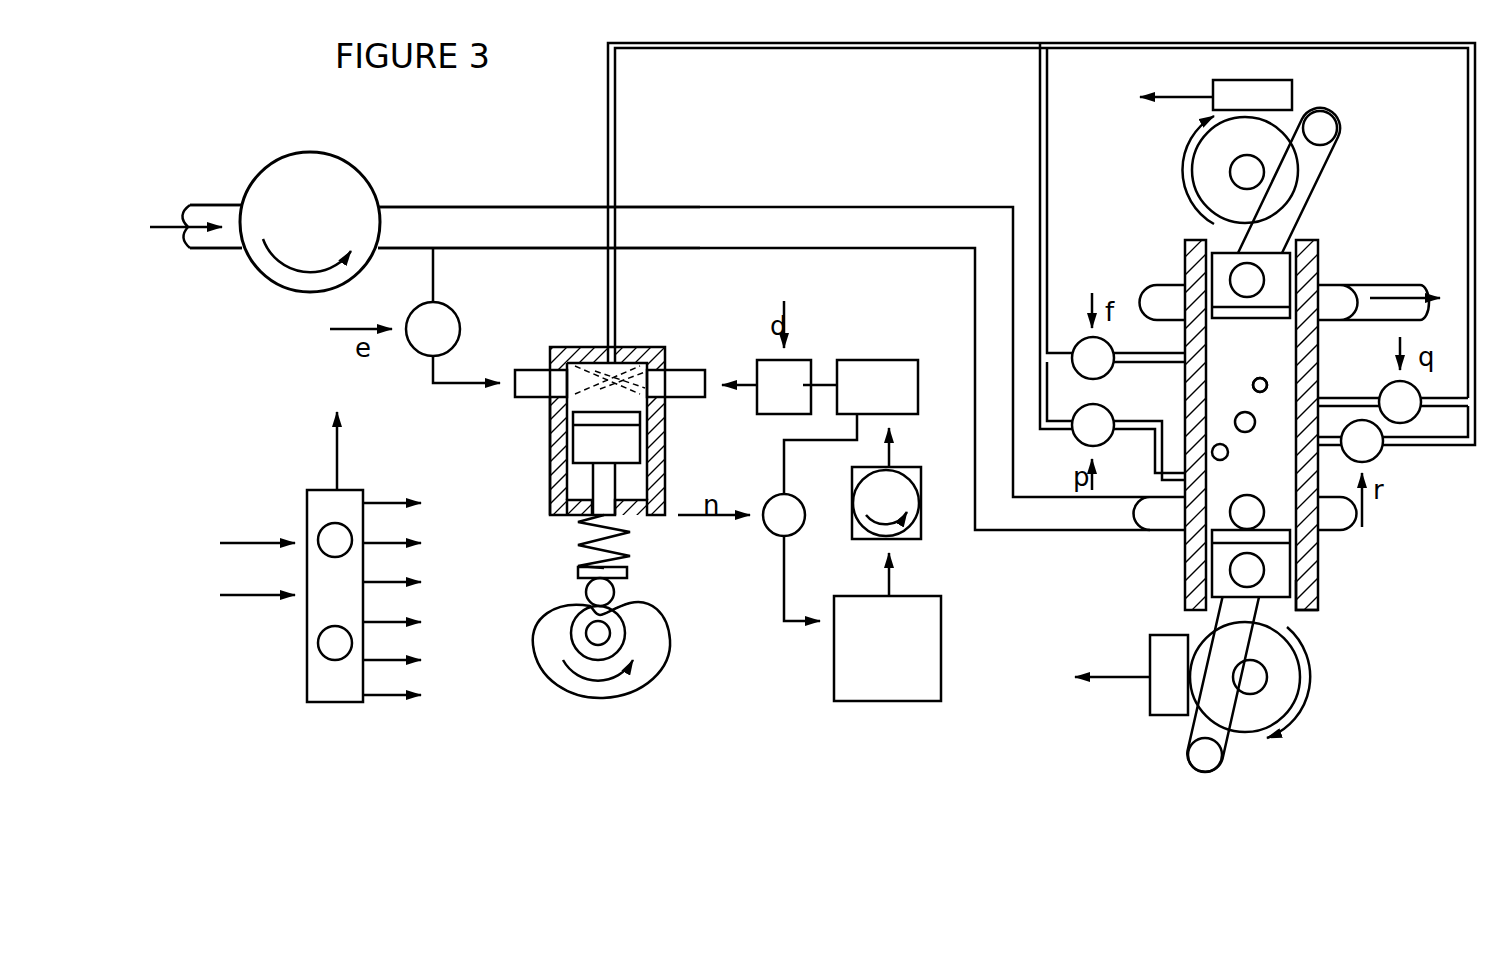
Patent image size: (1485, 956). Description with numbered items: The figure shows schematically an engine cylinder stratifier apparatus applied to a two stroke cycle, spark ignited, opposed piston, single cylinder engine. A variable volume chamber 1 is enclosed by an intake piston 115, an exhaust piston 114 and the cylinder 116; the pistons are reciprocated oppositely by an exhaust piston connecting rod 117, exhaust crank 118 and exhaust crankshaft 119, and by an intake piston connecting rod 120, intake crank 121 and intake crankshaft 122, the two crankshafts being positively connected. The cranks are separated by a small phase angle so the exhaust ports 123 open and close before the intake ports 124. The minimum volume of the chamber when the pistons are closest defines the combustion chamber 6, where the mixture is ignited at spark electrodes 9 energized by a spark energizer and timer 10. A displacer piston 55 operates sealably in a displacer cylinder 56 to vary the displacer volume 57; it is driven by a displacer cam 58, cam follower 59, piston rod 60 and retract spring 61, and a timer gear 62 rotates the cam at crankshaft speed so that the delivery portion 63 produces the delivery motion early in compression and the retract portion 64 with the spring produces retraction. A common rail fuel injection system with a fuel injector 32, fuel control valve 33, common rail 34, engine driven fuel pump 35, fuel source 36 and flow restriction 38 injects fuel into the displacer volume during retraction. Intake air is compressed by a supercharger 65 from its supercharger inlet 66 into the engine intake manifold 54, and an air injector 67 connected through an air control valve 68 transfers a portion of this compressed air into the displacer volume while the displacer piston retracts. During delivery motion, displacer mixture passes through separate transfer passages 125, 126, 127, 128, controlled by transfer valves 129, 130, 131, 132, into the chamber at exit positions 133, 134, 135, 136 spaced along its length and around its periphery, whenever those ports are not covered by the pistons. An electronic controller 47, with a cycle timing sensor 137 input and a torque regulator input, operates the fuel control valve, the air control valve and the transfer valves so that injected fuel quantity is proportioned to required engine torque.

The variable volume chamber 1 is at (1266, 376).
The combustion chamber 6 is at (1150, 495).
The spark electrodes 9 is at (1238, 418).
The spark energizer and timer 10 is at (1268, 102).
The fuel injector 32 is at (682, 380).
The fuel control valve 33 is at (766, 385).
The common rail 34 is at (862, 372).
The engine driven fuel pump 35 is at (882, 492).
The fuel source 36 is at (886, 617).
The flow restriction 38 is at (770, 505).
The electronic controller 47 is at (320, 677).
The engine intake manifold 54 is at (660, 222).
The displacer piston 55 is at (588, 442).
The displacer cylinder 56 is at (563, 467).
The displacer volume 57 is at (603, 382).
The displacer cam 58 is at (573, 677).
The cam follower 59 is at (612, 588).
The piston rod 60 is at (605, 483).
The retract spring 61 is at (590, 547).
The timer gear 62 is at (573, 637).
The delivery portion 63 is at (648, 597).
The retract portion 64 is at (570, 612).
The supercharger 65 is at (308, 178).
The supercharger inlet 66 is at (213, 215).
The air injector 67 is at (543, 375).
The air control valve 68 is at (422, 308).
The exhaust piston 114 is at (1303, 242).
The intake piston 115 is at (1317, 603).
The cylinder 116 is at (1318, 567).
The exhaust piston connecting rod 117 is at (1292, 185).
The exhaust crank 118 is at (1272, 153).
The exhaust crankshaft 119 is at (1243, 168).
The intake piston connecting rod 120 is at (1207, 717).
The intake crank 121 is at (1255, 735).
The intake crankshaft 122 is at (1258, 677).
The exhaust ports 123 is at (1177, 297).
The intake ports 124 is at (1188, 518).
The displacer mixture transfer passage 125 is at (1412, 455).
The displacer mixture transfer passage 126 is at (1457, 408).
The displacer mixture transfer passage 127 is at (1140, 355).
The displacer mixture transfer passage 128 is at (1135, 430).
The displacer mixture transfer valve 129 is at (1377, 455).
The displacer mixture transfer valve 130 is at (1385, 393).
The displacer mixture transfer valve 131 is at (1078, 340).
The displacer mixture transfer valve 132 is at (1082, 438).
The exit position 133 is at (1340, 530).
The exit position 134 is at (1323, 373).
The exit position 135 is at (1177, 378).
The exit position 136 is at (1163, 470).
The cycle timing sensor 137 is at (1157, 692).